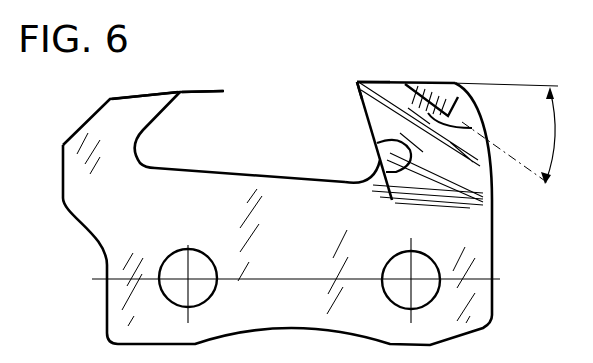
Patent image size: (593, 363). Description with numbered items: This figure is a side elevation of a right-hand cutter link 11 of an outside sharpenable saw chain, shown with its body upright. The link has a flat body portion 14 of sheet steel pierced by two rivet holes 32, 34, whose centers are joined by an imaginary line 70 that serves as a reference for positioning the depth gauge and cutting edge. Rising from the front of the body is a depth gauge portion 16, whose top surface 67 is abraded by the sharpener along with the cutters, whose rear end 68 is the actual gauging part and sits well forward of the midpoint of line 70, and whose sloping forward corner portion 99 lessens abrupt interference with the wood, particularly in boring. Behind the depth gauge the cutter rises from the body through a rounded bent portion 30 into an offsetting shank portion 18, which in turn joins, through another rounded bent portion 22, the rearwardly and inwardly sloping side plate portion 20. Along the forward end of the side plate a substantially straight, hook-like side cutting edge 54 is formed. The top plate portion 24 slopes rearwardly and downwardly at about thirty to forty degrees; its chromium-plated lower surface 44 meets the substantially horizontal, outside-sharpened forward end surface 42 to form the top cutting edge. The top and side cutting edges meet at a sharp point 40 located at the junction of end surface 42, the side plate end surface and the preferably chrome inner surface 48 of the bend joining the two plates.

The body portion 14 is at (483, 276).
The sloping forward corner portion 99 is at (90, 118).
The top surface of depth gauge portion 67 is at (158, 91).
The rear end of depth gauge portion 68 is at (222, 91).
The depth gauge portion 16 is at (122, 125).
The offsetting shank portion 18 is at (380, 165).
The side plate portion 20 is at (400, 125).
The rounded bent portion 22 is at (378, 143).
The side cutting edge 54 is at (357, 100).
The forward work engaging end surface of top plate portion 42 is at (414, 81).
The sharp point 40 is at (357, 80).
The inner surface of angular portion 48 is at (378, 82).
The rounded bent portion 30 is at (400, 198).
The top plate portion 24 is at (468, 85).
The lower surface of top plate portion 44 is at (468, 128).
The cutter link 11 is at (453, 66).
The imaginary line 70 is at (276, 278).
The rivet hole 34 is at (176, 262).
The rivet hole 32 is at (401, 308).